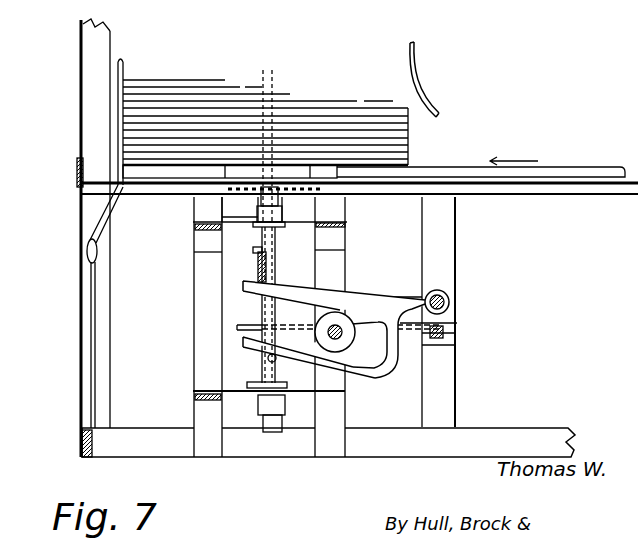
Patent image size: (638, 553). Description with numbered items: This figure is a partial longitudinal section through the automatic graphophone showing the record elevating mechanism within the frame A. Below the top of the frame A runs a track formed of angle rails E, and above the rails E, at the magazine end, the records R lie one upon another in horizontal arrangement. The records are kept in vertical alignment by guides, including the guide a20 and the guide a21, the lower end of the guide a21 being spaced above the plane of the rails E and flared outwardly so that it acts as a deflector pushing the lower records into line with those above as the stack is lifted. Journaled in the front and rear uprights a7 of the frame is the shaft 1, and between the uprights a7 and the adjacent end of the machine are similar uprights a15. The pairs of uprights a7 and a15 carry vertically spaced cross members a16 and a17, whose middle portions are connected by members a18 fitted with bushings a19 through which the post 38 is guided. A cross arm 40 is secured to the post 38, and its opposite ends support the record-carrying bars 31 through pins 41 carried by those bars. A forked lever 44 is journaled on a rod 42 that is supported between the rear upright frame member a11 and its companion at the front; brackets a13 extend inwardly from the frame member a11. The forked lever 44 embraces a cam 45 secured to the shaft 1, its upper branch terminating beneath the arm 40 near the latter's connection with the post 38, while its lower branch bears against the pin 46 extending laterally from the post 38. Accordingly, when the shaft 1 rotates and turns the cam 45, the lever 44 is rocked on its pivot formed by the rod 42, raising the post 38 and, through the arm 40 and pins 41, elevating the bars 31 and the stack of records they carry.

The frame A is at (74, 126).
The guide a20 is at (125, 68).
The stack of sheets / record R is at (188, 100).
The bars 31 is at (274, 93).
The guide a21 is at (418, 80).
The angle rails E is at (564, 181).
The uprights a15 is at (200, 305).
The cross member a17 is at (176, 409).
The bushings a19 is at (290, 409).
The members a18 is at (307, 222).
The cross member a16 is at (340, 241).
The uprights a7 is at (339, 268).
The rear upright frame member a11 is at (446, 248).
The post 38 is at (277, 265).
The cross arm 40 is at (258, 268).
The pins 41 is at (253, 250).
The brackets a13 is at (456, 332).
The forked lever 44 is at (392, 297).
The shaft 1 is at (348, 335).
The cam 45 is at (328, 325).
The rod 42 is at (450, 301).
The pin 46 is at (267, 361).